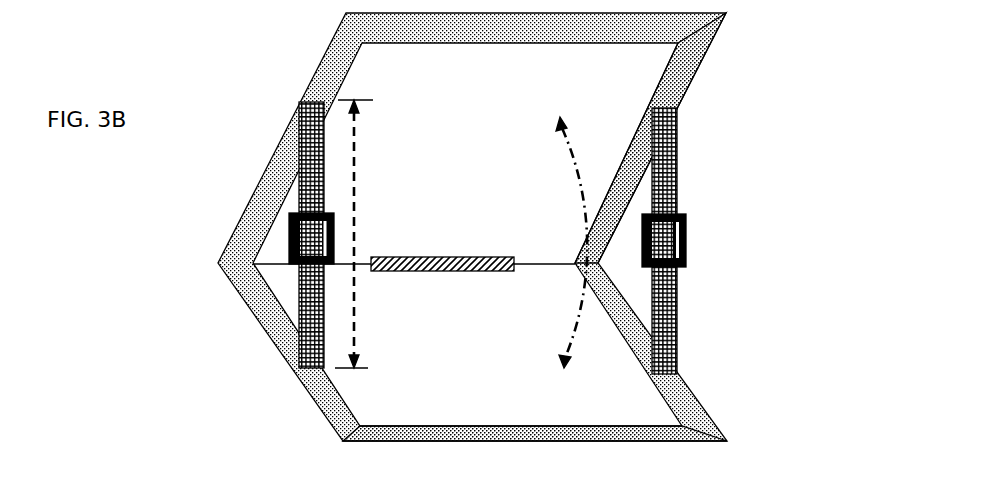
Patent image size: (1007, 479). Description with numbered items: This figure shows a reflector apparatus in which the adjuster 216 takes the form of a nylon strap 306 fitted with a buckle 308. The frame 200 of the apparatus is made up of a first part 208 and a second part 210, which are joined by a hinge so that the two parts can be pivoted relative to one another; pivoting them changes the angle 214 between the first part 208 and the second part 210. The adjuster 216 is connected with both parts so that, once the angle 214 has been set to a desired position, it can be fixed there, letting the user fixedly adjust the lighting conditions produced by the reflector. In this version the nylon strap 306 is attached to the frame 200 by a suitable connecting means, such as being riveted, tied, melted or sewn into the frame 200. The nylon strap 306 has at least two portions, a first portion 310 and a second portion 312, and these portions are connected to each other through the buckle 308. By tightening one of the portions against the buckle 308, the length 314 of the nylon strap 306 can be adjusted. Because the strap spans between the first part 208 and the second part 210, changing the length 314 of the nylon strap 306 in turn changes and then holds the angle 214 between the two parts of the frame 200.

The frame 200 is at (343, 58).
The first part 208 is at (686, 62).
The second part 210 is at (343, 426).
The angle 214 is at (589, 190).
The adjuster 216 is at (742, 241).
The nylon strap 306 is at (676, 168).
The buckle 308 is at (687, 262).
The first portion 310 is at (300, 163).
The second portion 312 is at (300, 302).
The length 314 is at (362, 158).